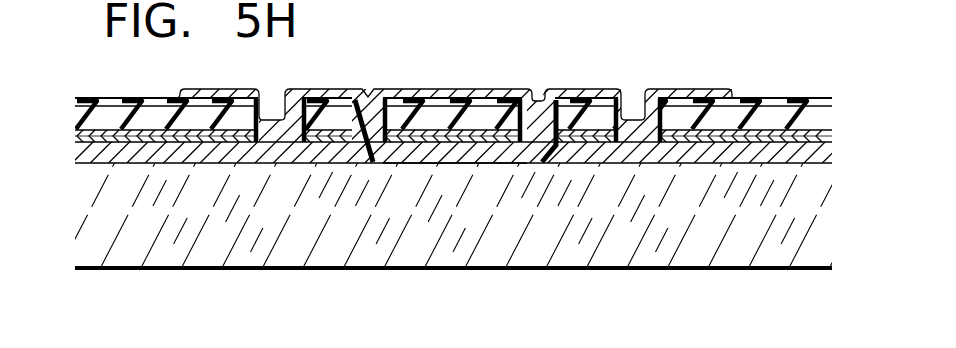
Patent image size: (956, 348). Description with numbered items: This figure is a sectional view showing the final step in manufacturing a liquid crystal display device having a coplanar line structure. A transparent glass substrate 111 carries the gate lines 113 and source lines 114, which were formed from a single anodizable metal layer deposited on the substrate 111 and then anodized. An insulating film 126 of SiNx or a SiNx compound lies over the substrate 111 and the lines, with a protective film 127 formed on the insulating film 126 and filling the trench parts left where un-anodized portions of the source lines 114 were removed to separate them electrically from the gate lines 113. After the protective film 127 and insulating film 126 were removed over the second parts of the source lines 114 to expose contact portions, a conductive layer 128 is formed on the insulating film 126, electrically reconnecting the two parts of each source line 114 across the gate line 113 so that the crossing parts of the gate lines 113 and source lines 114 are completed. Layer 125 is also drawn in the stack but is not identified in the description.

The transparent glass substrate 111 is at (605, 253).
The gate line 113 is at (445, 150).
The source line 114 is at (100, 147).
The barrier layer 125 is at (120, 133).
The insulating film 126 is at (92, 100).
The protective film 127 is at (200, 107).
The conductive layer 128 is at (593, 97).